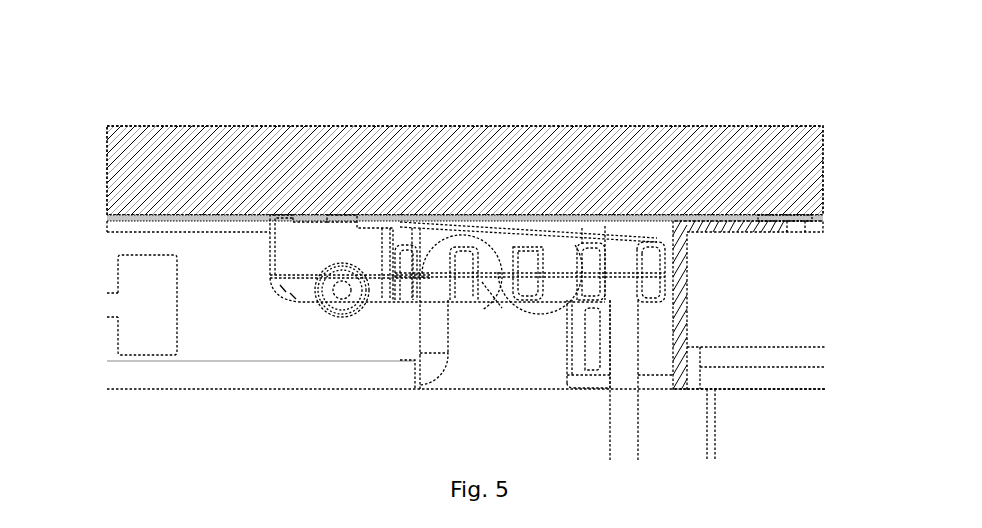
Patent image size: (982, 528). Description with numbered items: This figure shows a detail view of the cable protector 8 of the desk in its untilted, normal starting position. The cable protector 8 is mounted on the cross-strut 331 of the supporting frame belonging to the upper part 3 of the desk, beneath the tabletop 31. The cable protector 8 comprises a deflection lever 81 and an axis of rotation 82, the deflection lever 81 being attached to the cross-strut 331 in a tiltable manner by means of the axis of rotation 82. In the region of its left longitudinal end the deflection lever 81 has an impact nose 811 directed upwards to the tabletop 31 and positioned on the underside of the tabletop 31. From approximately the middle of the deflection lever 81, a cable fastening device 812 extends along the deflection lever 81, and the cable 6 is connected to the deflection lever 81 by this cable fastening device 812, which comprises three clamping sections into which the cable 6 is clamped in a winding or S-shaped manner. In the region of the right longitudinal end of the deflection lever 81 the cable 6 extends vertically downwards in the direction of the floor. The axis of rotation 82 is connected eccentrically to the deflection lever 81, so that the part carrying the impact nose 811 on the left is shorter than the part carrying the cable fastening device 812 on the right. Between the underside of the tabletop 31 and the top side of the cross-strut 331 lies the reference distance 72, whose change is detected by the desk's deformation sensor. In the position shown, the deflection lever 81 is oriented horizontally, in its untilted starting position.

The upper part 3 is at (725, 114).
The tabletop 31 is at (240, 150).
The cross-strut 331 is at (113, 227).
The reference distance 72 is at (827, 212).
The cable protector 8 is at (677, 268).
The deflection lever 81 is at (510, 216).
The impact nose 811 is at (281, 217).
The cable fastening device 812 is at (593, 268).
The axis of rotation 82 is at (342, 288).
The cable 6 is at (135, 378).